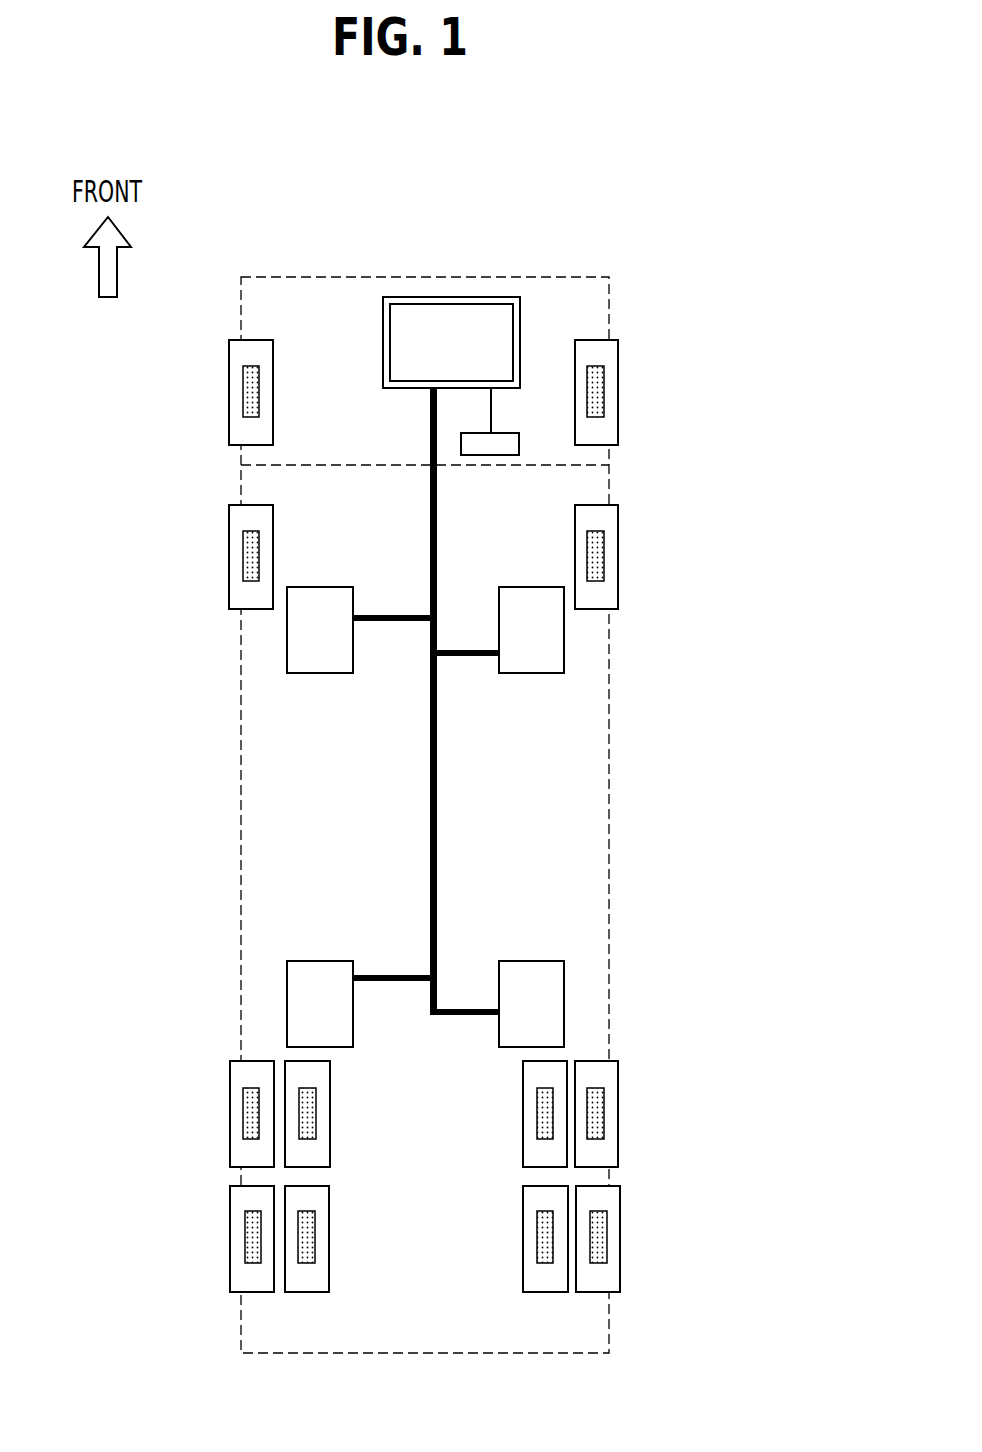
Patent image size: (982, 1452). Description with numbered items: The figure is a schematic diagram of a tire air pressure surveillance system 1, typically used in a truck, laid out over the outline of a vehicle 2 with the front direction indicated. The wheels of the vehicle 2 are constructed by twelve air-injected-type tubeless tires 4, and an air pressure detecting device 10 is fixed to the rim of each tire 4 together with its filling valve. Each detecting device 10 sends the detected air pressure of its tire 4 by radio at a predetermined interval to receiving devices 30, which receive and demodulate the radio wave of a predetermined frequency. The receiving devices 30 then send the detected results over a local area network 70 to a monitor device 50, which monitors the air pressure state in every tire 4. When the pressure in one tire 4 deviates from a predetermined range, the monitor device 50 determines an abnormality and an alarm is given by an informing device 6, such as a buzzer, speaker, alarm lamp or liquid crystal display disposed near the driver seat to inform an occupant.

The tire air pressure surveillance system 1 is at (443, 228).
The vehicle 2 is at (609, 308).
The tire 4 is at (229, 352).
The informing device 6 is at (519, 445).
The air pressure detecting device 10 is at (243, 388).
The receiving device 30 is at (293, 655).
The monitor device 50 is at (462, 322).
The local area network (LAN) 70 is at (437, 828).